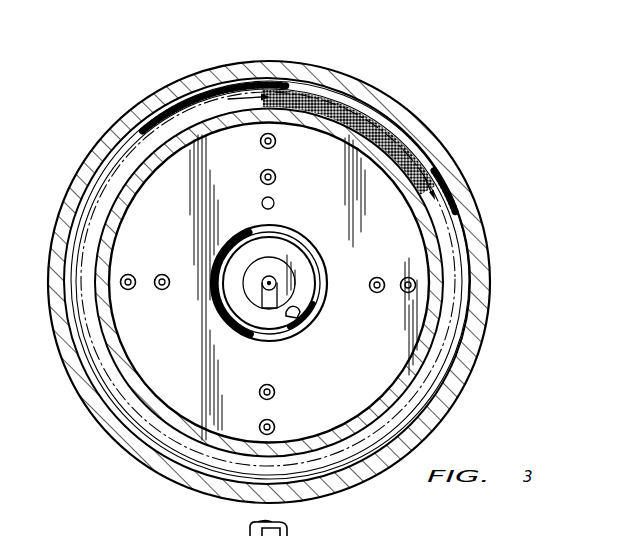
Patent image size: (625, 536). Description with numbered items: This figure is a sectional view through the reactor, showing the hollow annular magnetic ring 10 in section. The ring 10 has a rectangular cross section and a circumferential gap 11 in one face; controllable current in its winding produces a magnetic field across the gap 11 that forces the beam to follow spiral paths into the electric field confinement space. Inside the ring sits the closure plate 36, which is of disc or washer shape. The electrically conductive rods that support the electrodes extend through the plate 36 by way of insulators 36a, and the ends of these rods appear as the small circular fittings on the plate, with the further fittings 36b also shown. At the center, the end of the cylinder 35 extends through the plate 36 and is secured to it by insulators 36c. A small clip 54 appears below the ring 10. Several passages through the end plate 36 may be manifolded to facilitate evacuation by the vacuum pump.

The hollow annular magnetic ring 10 is at (153, 100).
The circumferential gap 11 is at (293, 93).
The cylinder 35 is at (296, 308).
The closure plate 36 is at (372, 362).
The insulators 36a is at (276, 141).
The disc bolts 36b is at (276, 177).
The insulators 36c is at (318, 224).
The clip 54 is at (287, 530).